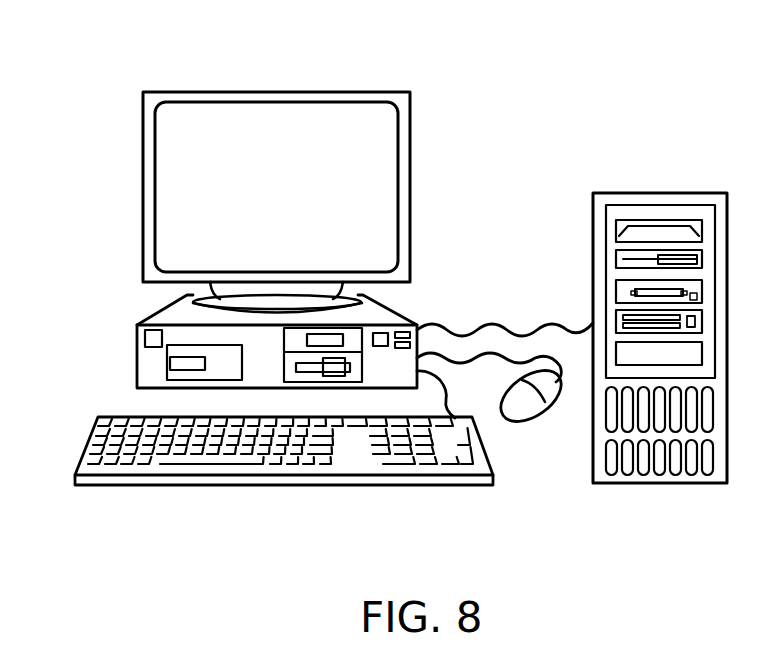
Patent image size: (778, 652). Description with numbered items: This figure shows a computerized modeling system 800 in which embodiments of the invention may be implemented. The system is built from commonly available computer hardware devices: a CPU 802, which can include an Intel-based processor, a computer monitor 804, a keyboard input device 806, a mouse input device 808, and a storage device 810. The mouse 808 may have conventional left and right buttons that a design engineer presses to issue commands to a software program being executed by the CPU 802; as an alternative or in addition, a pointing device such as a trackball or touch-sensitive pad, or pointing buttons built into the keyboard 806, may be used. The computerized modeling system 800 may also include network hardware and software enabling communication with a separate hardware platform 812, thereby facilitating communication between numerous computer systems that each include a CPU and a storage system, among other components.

The computerized modeling system 800 is at (465, 67).
The CPU 802 is at (172, 360).
The computer monitor 804 is at (387, 174).
The keyboard input device 806 is at (88, 440).
The mouse input device 808 is at (541, 416).
The storage device 810 is at (352, 358).
The hardware platform 812 is at (656, 193).